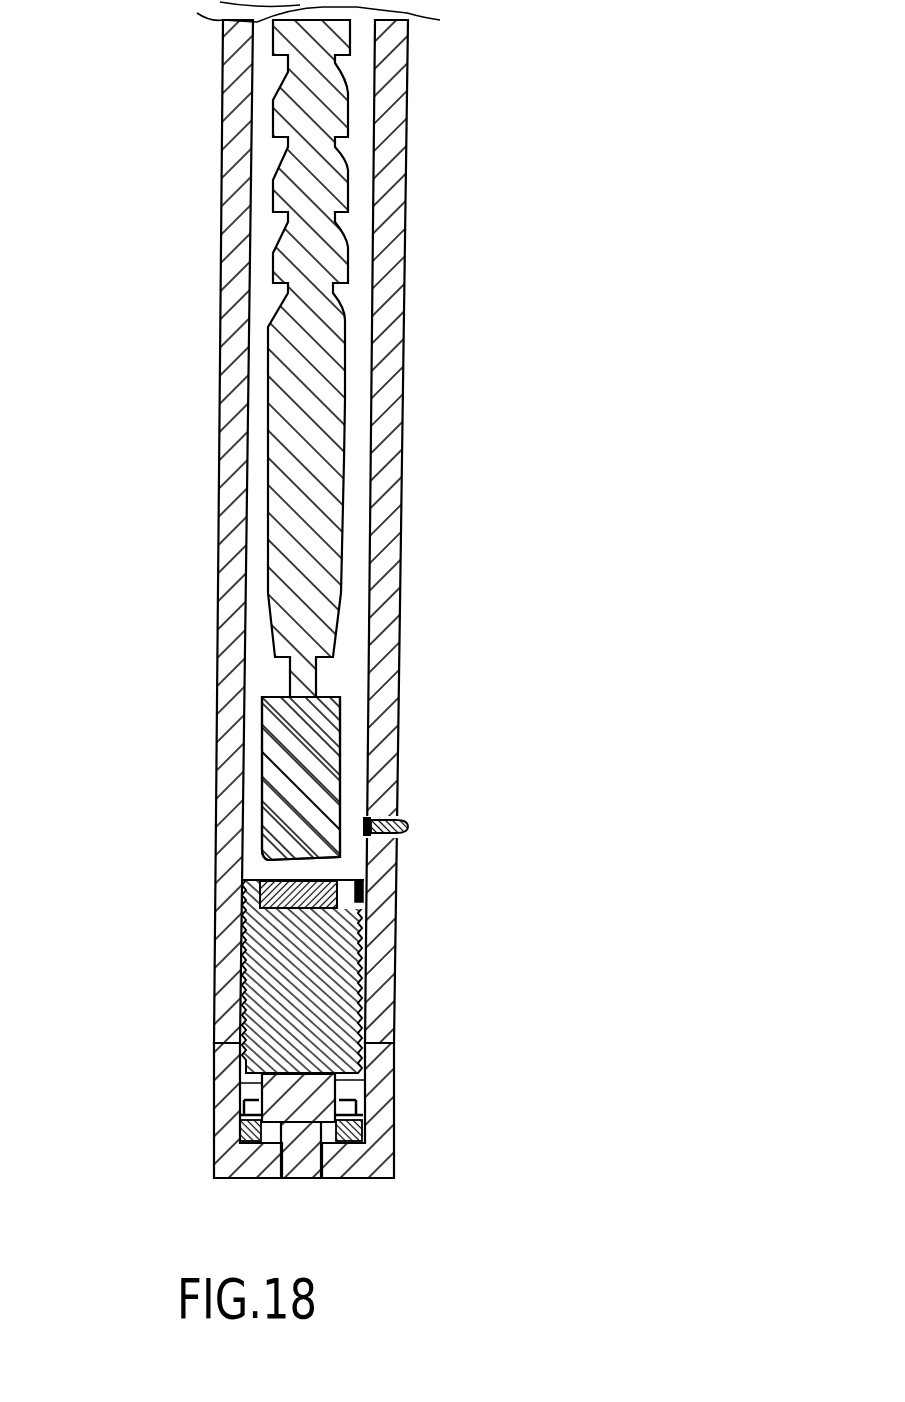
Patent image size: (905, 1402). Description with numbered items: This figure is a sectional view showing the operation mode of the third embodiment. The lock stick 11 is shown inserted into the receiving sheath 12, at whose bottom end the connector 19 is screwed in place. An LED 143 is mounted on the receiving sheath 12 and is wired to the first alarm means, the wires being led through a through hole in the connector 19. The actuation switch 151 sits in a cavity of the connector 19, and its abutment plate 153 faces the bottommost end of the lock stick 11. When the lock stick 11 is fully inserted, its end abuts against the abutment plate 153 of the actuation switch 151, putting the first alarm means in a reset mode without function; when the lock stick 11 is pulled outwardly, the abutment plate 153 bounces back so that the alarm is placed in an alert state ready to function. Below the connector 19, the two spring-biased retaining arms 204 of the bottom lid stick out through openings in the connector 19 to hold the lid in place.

The receiving sheath 12 is at (398, 228).
The lock stick 11 is at (313, 380).
The LED 143 is at (410, 815).
The abutment plate 153 is at (262, 877).
The actuation switch 151 is at (368, 900).
The connector 19 is at (320, 1003).
The retaining arms 204 is at (363, 1098).